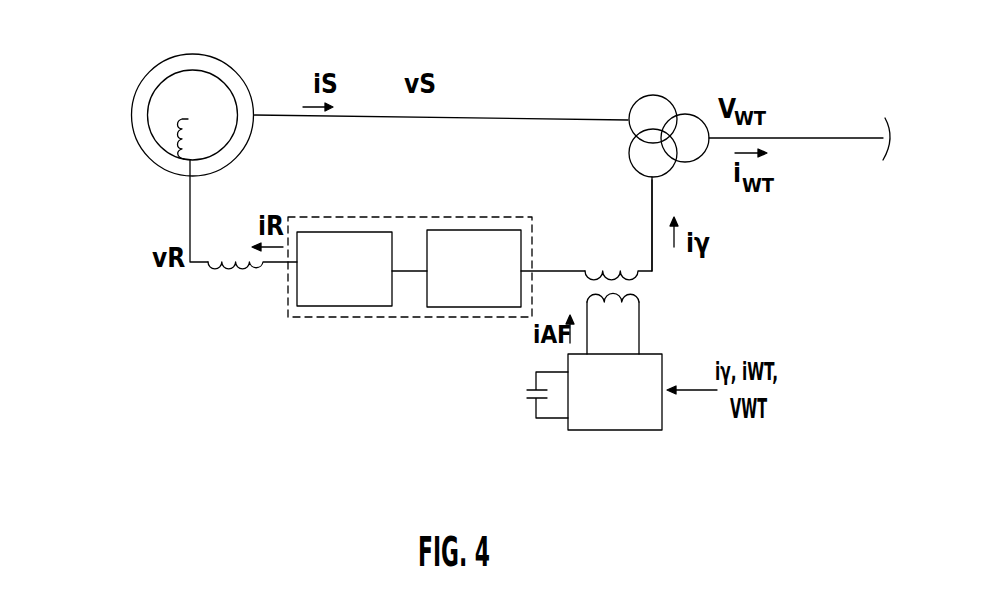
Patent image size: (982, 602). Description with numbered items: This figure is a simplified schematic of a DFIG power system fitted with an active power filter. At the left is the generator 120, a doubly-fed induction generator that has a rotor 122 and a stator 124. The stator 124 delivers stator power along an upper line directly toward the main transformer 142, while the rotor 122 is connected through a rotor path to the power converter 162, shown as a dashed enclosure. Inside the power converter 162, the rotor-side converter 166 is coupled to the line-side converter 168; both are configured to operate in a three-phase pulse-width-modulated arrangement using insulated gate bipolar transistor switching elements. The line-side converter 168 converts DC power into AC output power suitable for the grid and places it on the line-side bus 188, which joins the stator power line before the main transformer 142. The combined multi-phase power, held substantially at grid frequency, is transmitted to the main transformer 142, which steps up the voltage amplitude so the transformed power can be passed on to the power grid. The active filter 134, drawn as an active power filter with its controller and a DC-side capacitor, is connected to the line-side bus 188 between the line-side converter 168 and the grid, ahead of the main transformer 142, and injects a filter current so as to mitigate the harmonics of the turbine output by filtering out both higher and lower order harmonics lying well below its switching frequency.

The generator 120 is at (165, 108).
The rotor 122 is at (231, 92).
The stator 124 is at (135, 97).
The active filter 134 is at (562, 430).
The main transformer 142 is at (646, 88).
The power converter 162 is at (370, 316).
The rotor-side converter 166 is at (333, 307).
The line-side converter 168 is at (460, 307).
The line-side bus 188 is at (652, 226).